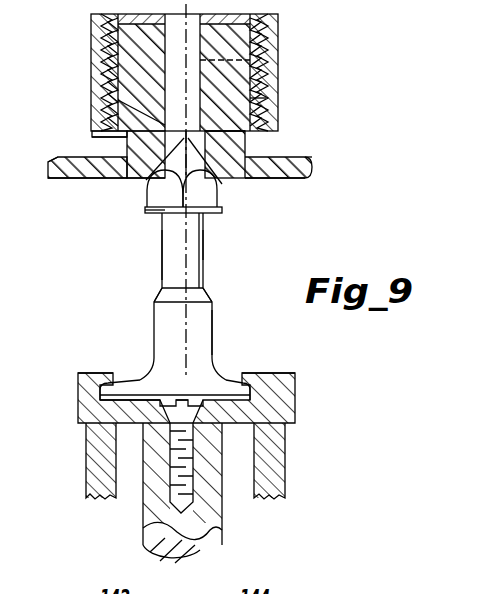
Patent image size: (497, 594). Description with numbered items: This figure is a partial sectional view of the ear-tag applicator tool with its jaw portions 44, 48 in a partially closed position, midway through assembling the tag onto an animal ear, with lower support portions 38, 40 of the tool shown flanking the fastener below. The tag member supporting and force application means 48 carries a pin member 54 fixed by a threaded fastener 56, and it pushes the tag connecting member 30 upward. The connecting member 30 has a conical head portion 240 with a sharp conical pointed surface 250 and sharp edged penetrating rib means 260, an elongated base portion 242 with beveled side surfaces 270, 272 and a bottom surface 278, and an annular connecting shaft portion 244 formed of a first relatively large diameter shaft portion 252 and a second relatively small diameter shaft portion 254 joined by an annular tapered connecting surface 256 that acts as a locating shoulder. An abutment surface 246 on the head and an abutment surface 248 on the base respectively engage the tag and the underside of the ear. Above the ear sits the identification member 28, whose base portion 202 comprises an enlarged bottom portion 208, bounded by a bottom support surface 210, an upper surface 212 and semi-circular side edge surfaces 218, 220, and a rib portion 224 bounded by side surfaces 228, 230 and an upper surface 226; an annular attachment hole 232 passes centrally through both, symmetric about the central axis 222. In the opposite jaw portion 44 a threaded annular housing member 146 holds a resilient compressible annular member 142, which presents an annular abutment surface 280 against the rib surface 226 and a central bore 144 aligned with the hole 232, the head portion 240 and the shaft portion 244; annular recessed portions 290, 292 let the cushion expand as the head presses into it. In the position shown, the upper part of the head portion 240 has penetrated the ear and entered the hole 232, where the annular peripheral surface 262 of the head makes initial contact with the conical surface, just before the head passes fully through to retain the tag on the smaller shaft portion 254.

The identification member 28 is at (318, 157).
The tag connecting member 30 is at (213, 306).
The support leg 38 is at (275, 462).
The support leg 40 is at (100, 465).
The jaw portion 44 is at (262, 38).
The tag member supporting and force application means 48 is at (291, 372).
The pin member 54 is at (192, 538).
The threaded fastener 56 is at (166, 488).
The resilient compressible annular member 142 is at (238, 78).
The central bore 144 is at (112, 32).
The threaded annular housing member 146 is at (120, 17).
The base portion 202 is at (125, 137).
The enlarged bottom portion 208 is at (84, 181).
The bottom support surface 210 is at (92, 181).
The upper surface 212 is at (112, 157).
The semi-circular side edge surface 218 is at (70, 181).
The semi-circular side edge surface 220 is at (314, 169).
The central axis 222 is at (268, 62).
The rib portion 224 is at (245, 143).
The surface 226 is at (250, 93).
The side surface 228 is at (127, 147).
The side surface 230 is at (266, 165).
The annular attachment hole 232 is at (203, 160).
The head portion 240 is at (212, 213).
The elongated base portion 242 is at (245, 400).
The annular connecting shaft portion 244 is at (156, 300).
The abutment surface 246 is at (206, 240).
The abutment surface 248 is at (145, 373).
The conical pointed surface 250 is at (157, 128).
The first relatively large diameter shaft portion 252 is at (206, 330).
The second relatively small diameter shaft portion 254 is at (199, 246).
The annular tapered connecting surface 256 is at (212, 299).
The sharp edged penetrating rib means 260 is at (214, 198).
The annular peripheral surface 262 is at (143, 195).
The side surface 270 is at (110, 372).
The side surface 272 is at (252, 377).
The bottom surface 278 is at (110, 398).
The annular abutment surface 280 is at (134, 179).
The annular recessed portion 290 is at (253, 28).
The annular recessed portion 292 is at (253, 130).